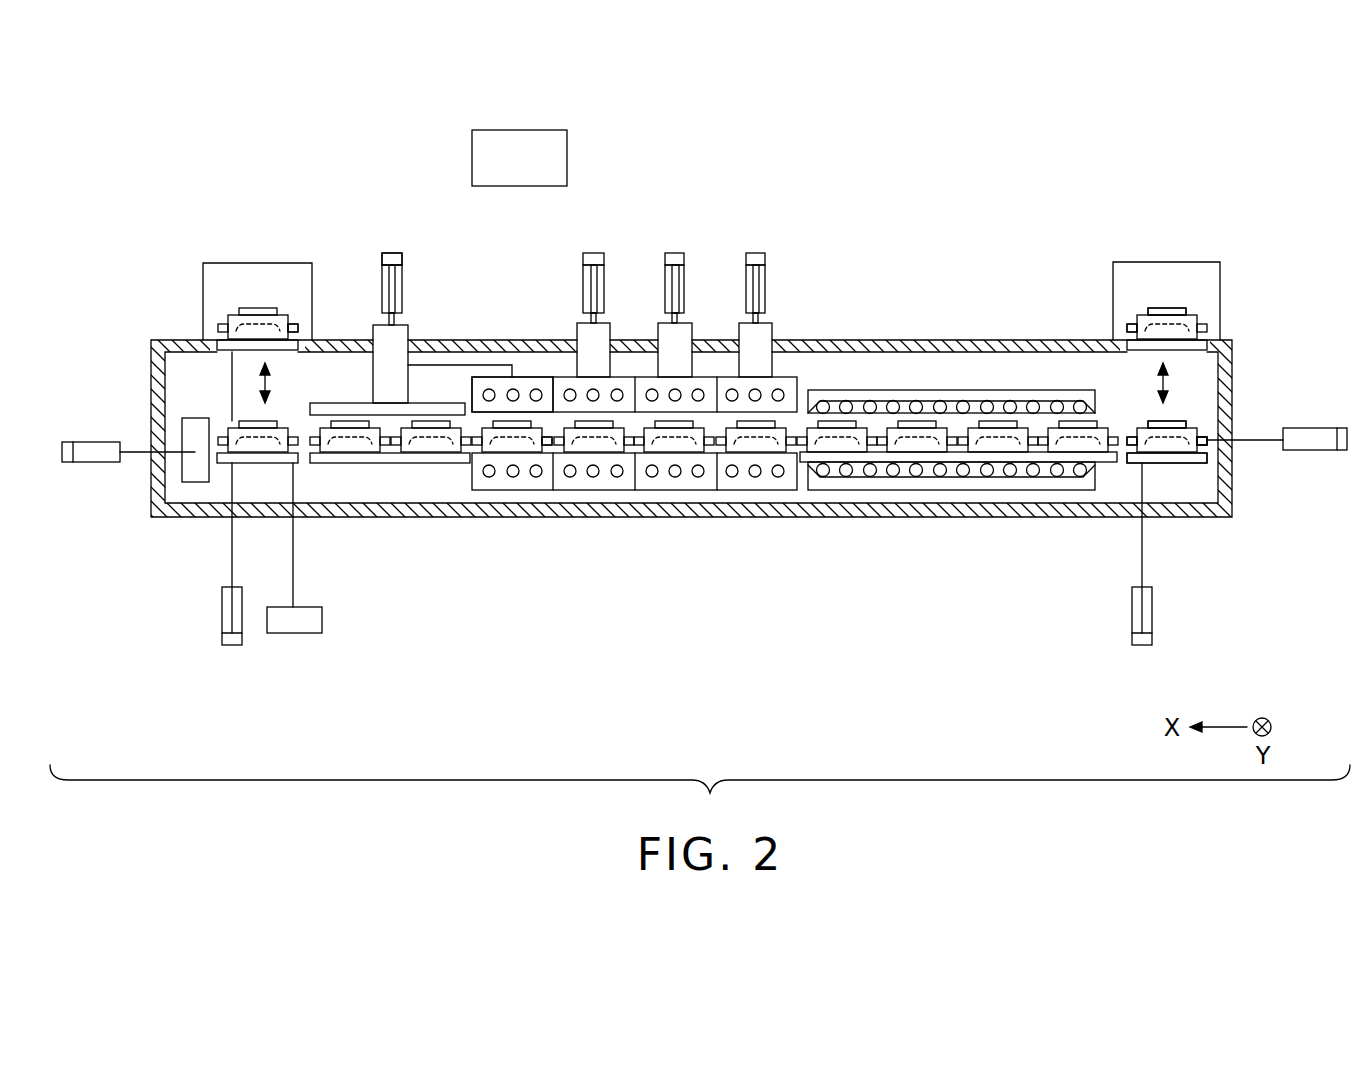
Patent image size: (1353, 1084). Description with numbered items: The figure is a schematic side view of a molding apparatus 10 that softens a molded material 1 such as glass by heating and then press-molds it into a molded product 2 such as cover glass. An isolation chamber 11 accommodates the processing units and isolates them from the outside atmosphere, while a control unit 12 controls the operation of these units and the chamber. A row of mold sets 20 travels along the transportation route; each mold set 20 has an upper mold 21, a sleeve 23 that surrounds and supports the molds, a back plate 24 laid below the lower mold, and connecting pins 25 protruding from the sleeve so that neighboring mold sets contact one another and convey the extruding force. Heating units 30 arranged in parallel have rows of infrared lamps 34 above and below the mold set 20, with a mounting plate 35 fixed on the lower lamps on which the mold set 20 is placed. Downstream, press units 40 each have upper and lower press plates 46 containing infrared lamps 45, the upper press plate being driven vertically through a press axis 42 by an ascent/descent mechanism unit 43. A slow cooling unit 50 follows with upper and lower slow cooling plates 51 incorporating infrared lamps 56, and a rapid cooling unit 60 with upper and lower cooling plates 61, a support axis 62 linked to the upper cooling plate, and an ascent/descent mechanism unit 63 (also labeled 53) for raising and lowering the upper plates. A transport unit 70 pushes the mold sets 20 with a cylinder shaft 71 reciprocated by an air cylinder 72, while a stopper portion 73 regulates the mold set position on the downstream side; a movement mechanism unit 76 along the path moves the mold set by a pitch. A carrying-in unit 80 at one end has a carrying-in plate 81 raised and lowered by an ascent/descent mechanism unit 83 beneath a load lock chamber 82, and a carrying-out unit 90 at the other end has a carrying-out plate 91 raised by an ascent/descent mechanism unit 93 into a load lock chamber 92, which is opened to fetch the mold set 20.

The molded material 1 is at (1160, 316).
The molded product 2 is at (268, 328).
The molding apparatus 10 is at (1207, 198).
The isolation chamber 11 is at (1232, 510).
The control unit 12 is at (568, 160).
The mold set 20 is at (282, 308).
The upper mold 21 is at (1167, 308).
The sleeve 23 is at (1207, 440).
The back plate 24 is at (1207, 345).
The connecting pin 25 is at (300, 326).
The heating unit 30 is at (840, 490).
The infrared lamp 34 is at (916, 400).
The mounting plate 35 is at (823, 477).
The press unit 40 is at (553, 377).
The press axis 42 is at (578, 330).
The ascent/descent mechanism unit 43 is at (663, 265).
The infrared lamp 45 is at (755, 389).
The press plate 46 is at (522, 458).
The slow cooling unit 50 is at (513, 390).
The slow cooling plate 51 is at (472, 392).
The lifting cylinder 53 is at (392, 259).
The infrared lamp 56 is at (489, 390).
The rapid cooling unit 60 is at (432, 405).
The cooling plate 61 is at (345, 403).
The support axis 62 is at (375, 360).
The ascent/descent mechanism unit 63 is at (400, 262).
The transport unit 70 is at (1320, 428).
The cylinder shaft 71 is at (1260, 440).
The air cylinder 72 is at (1310, 450).
The stopper portion 73 is at (90, 462).
The movement mechanism unit 76 is at (305, 633).
The carrying-in unit 80 is at (1195, 463).
The carrying-in plate 81 is at (1145, 463).
The load lock chamber 82 is at (1220, 275).
The ascent/descent mechanism unit 83 is at (1130, 625).
The carrying-out unit 90 is at (245, 463).
The carrying-out plate 91 is at (258, 463).
The load lock chamber 92 is at (203, 285).
The ascent/descent mechanism unit 93 is at (222, 610).